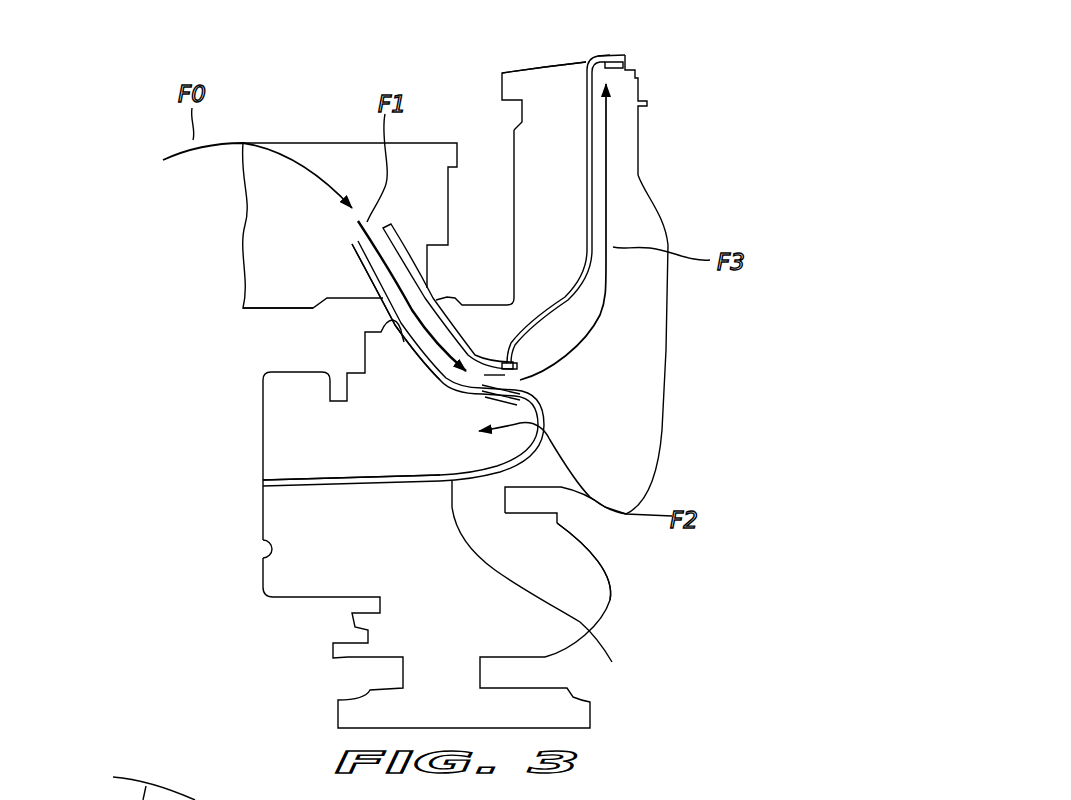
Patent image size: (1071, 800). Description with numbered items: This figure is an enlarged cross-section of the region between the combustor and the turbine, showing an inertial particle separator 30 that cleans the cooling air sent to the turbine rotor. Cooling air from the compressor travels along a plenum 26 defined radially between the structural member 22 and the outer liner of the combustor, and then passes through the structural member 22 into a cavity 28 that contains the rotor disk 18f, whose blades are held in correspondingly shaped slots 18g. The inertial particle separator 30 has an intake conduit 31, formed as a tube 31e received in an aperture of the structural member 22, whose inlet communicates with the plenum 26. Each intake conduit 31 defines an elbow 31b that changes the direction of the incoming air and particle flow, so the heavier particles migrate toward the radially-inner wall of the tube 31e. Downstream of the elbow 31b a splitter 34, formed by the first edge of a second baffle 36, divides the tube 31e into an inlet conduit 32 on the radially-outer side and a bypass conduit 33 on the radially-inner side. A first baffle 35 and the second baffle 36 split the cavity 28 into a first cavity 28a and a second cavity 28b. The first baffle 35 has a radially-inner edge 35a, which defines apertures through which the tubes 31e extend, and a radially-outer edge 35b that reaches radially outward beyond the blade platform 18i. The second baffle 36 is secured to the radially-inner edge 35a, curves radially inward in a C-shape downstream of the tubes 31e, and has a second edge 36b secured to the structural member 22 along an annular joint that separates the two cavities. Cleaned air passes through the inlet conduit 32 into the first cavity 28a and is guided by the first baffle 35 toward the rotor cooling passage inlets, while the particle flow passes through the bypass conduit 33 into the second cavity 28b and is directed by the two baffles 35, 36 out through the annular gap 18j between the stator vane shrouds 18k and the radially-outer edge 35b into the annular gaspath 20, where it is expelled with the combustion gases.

The disk 18f is at (690, 400).
The slots 18g is at (667, 155).
The platform 18i is at (615, 69).
The annular gap 18j is at (580, 65).
The shrouds 18k is at (558, 66).
The annular gaspath 20 is at (596, 45).
The structural member 22 is at (273, 328).
The plenum 26 is at (294, 212).
The cavity 28 is at (580, 580).
The first cavity 28a is at (613, 473).
The second cavity 28b is at (570, 194).
The inertial particle separator 30 is at (413, 518).
The intake conduit 31 is at (412, 349).
The elbow 31b is at (442, 395).
The tubes 31e is at (403, 363).
The inlet conduit 32 is at (522, 377).
The bypass conduit 33 is at (484, 401).
The splitters 34 is at (514, 386).
The first baffle 35 is at (573, 293).
The radially-inner edge 35a is at (504, 361).
The radially-outer edge 35b is at (608, 56).
The second baffle 36 is at (545, 584).
The second edge 36b is at (263, 561).